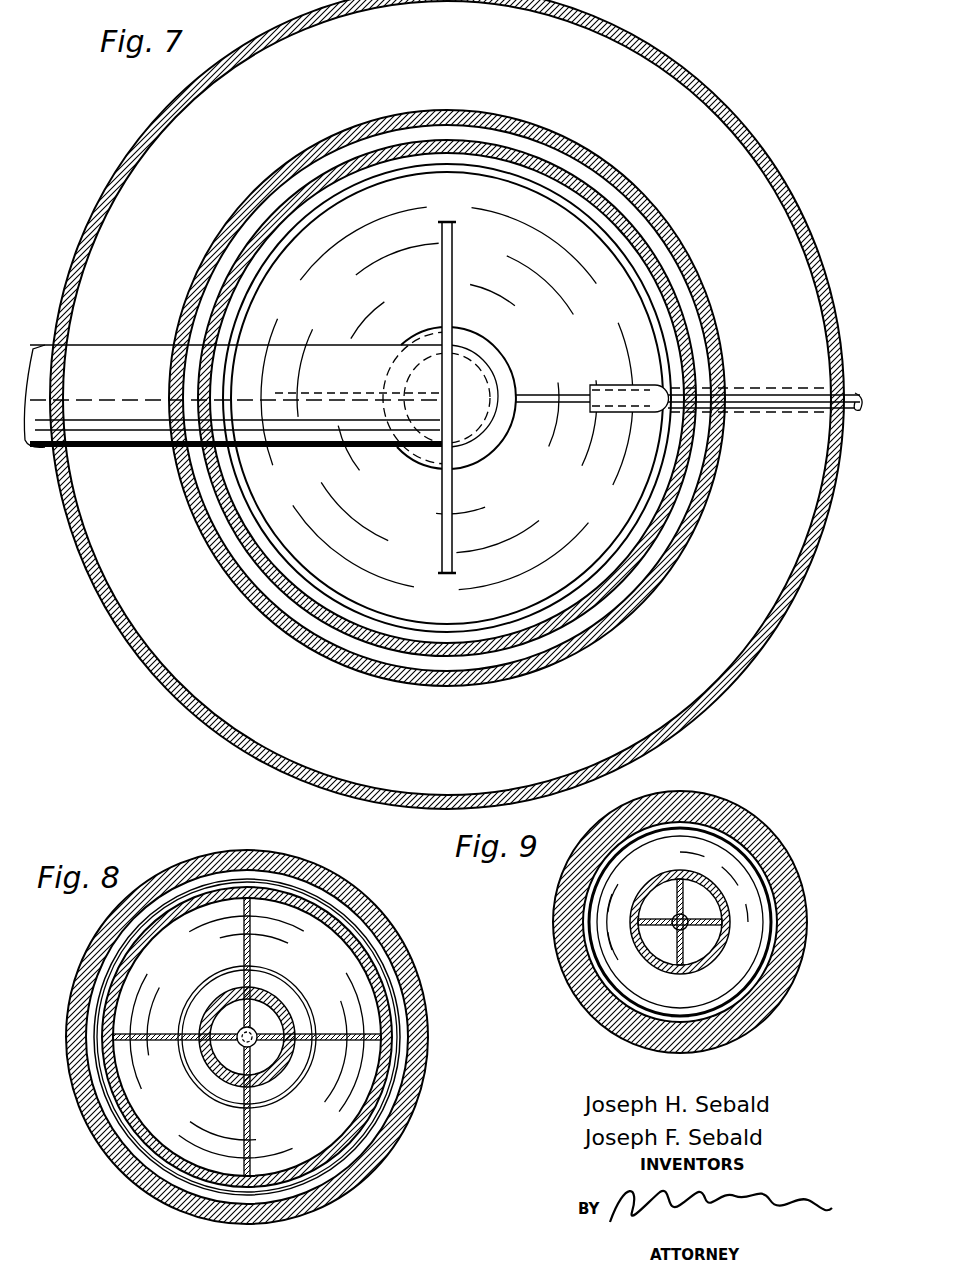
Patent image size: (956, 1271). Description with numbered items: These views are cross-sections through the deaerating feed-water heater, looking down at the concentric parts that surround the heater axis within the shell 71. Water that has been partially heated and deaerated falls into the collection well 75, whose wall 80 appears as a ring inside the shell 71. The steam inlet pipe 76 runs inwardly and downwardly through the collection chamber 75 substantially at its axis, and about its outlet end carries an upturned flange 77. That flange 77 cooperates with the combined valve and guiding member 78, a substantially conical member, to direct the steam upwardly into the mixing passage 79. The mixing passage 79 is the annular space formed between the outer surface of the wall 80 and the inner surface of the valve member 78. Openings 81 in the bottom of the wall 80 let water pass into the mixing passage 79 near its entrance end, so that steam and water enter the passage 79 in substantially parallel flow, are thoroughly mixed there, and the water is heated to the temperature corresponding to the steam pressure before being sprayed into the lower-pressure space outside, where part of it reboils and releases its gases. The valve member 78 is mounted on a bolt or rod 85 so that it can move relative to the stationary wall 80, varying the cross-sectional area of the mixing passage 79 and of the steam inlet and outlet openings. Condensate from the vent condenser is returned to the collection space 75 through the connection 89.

In FIG. 7, the shell 71 is at (738, 121).
In FIG. 7, the collection well 75 is at (607, 540).
In FIG. 7, the steam inlet pipe 76 is at (456, 376).
In FIG. 8, the steam inlet pipe 76 is at (277, 1002).
In FIG. 9, the steam inlet pipe 76 is at (700, 886).
In FIG. 9, the upturned flange 77 is at (648, 980).
In FIG. 8, the combined valve and guiding member 78 is at (403, 957).
In FIG. 9, the combined valve and guiding member 78 is at (753, 830).
In FIG. 8, the mixing passage 79 is at (388, 982).
In FIG. 9, the mixing passage 79 is at (762, 887).
In FIG. 7, the wall 80 is at (697, 278).
In FIG. 8, the wall 80 is at (392, 1010).
In FIG. 7, the openings 81 is at (505, 445).
In FIG. 8, the openings 81 is at (297, 1068).
In FIG. 9, the bolt or rod 85 is at (673, 923).
In FIG. 7, the connection 89 is at (633, 410).